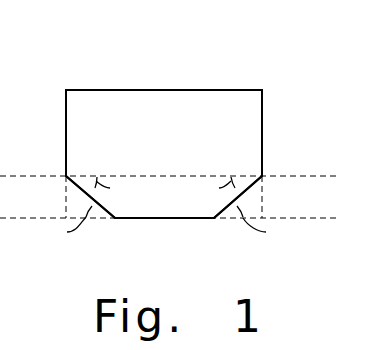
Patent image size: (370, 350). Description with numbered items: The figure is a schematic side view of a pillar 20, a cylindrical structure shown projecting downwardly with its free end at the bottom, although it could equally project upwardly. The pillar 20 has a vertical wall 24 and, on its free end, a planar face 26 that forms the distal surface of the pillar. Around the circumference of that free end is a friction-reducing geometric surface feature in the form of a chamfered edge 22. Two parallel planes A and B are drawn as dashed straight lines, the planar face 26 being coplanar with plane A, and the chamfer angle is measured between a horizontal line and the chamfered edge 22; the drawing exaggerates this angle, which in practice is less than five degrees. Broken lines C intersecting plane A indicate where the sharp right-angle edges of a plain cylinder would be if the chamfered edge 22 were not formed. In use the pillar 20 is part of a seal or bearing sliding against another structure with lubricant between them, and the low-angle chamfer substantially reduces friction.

The pillar 20 is at (84, 78).
The chamfered edge 22 is at (101, 208).
The vertical wall 24 is at (262, 108).
The planar face 26 is at (163, 218).
The plane A is at (316, 218).
The plane B is at (317, 176).
The broken lines C is at (64, 202).